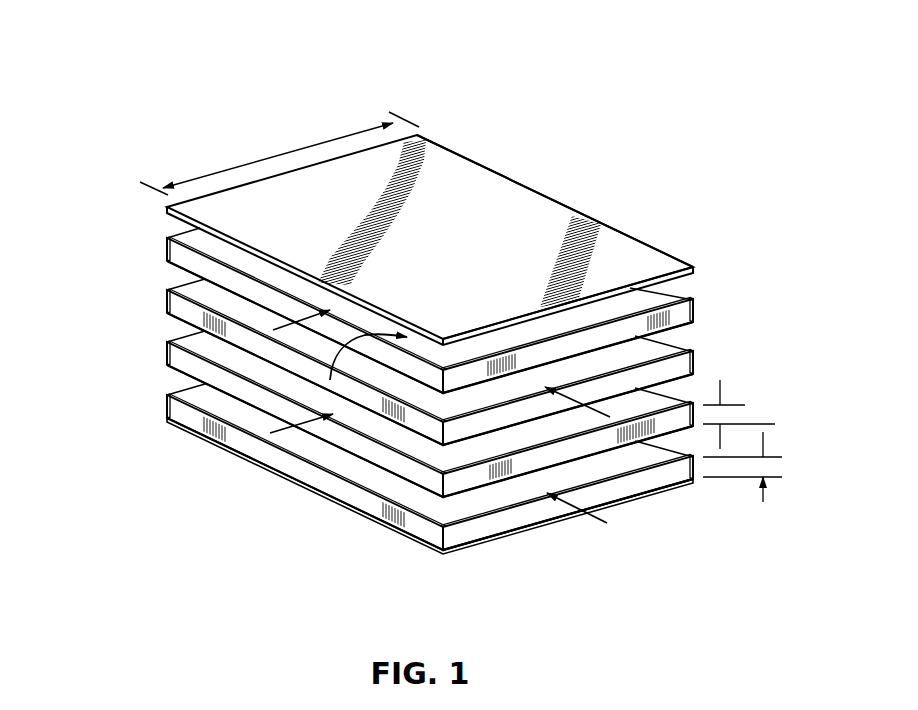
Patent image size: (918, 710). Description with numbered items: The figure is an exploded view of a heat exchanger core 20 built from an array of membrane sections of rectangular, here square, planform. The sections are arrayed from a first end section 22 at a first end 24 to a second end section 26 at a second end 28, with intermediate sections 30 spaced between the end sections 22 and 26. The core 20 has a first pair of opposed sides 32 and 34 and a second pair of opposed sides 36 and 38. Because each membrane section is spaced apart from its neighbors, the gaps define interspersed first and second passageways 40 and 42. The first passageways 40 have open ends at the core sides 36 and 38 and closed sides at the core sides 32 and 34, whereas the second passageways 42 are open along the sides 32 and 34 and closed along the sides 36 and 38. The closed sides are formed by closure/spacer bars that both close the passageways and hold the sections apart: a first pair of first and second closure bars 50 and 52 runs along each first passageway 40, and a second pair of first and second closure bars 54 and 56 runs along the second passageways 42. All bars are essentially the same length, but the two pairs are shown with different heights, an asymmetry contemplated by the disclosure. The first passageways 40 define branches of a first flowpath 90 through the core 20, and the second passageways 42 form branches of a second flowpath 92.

The heat exchanger core 20 is at (80, 127).
The first end section 22 is at (360, 513).
The first end 24 is at (478, 555).
The second end section 26 is at (640, 260).
The second end 28 is at (470, 203).
The intermediate sections 30 is at (167, 263).
The first side 32 is at (220, 152).
The first side (opposed) 34 is at (583, 533).
The second side 36 is at (352, 423).
The second side (opposed) 38 is at (560, 177).
The first passageways 40 is at (305, 380).
The second passageways 42 is at (585, 367).
The first closure bar 50 is at (167, 240).
The second closure bar 52 is at (693, 300).
The first closure bar 54 is at (428, 428).
The second closure bar 56 is at (697, 365).
The first flowpath 90 is at (272, 430).
The second flowpath 92 is at (577, 510).